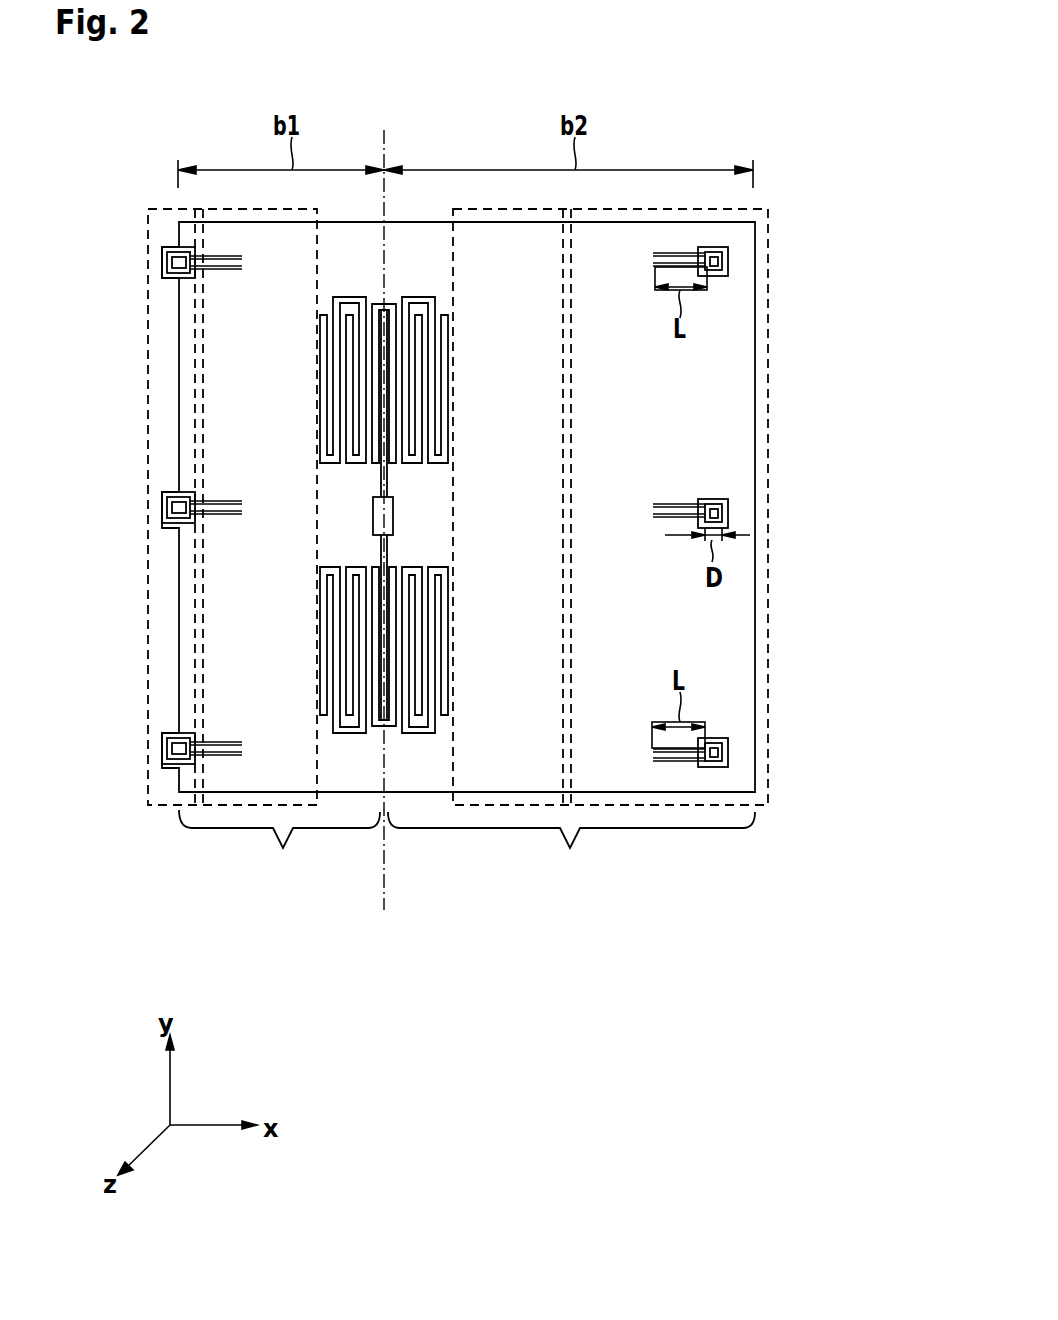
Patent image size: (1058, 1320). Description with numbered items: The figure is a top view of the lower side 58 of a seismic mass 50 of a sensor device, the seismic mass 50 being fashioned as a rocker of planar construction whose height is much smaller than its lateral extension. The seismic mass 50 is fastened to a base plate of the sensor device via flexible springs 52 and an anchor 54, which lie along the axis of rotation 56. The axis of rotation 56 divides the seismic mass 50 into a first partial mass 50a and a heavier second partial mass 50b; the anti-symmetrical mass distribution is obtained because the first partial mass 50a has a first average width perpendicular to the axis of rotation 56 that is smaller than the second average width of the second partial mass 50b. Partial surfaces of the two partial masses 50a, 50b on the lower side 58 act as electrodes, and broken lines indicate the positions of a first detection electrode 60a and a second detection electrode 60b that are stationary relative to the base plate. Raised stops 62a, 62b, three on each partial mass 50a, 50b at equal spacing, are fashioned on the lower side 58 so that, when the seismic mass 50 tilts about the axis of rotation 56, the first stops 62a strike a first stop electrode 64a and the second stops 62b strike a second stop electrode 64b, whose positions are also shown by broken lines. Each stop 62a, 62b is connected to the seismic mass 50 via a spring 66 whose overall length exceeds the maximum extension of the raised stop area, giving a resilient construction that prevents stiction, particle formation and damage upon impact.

The seismic mass 50 is at (672, 118).
The first partial mass 50a is at (281, 841).
The second partial mass 50b is at (569, 840).
The flexible springs 52 is at (396, 309).
The anchor 54 is at (393, 522).
The axis of rotation 56 is at (388, 876).
The lower side 58 is at (350, 765).
The first detection electrode 60a is at (235, 800).
The second detection electrode 60b is at (495, 800).
The first stop 62a is at (178, 745).
The second stop 62b is at (712, 752).
The first stop electrode 64a is at (165, 795).
The second stop electrode 64b is at (630, 800).
The spring 66 is at (685, 265).